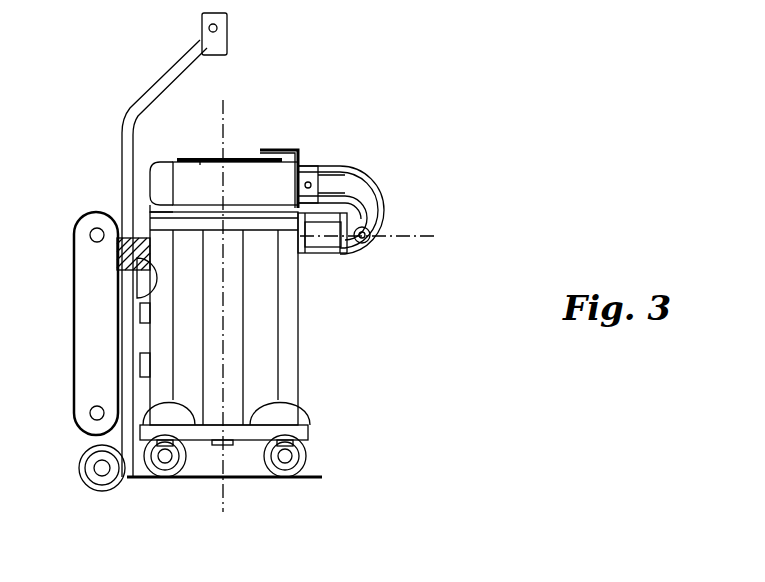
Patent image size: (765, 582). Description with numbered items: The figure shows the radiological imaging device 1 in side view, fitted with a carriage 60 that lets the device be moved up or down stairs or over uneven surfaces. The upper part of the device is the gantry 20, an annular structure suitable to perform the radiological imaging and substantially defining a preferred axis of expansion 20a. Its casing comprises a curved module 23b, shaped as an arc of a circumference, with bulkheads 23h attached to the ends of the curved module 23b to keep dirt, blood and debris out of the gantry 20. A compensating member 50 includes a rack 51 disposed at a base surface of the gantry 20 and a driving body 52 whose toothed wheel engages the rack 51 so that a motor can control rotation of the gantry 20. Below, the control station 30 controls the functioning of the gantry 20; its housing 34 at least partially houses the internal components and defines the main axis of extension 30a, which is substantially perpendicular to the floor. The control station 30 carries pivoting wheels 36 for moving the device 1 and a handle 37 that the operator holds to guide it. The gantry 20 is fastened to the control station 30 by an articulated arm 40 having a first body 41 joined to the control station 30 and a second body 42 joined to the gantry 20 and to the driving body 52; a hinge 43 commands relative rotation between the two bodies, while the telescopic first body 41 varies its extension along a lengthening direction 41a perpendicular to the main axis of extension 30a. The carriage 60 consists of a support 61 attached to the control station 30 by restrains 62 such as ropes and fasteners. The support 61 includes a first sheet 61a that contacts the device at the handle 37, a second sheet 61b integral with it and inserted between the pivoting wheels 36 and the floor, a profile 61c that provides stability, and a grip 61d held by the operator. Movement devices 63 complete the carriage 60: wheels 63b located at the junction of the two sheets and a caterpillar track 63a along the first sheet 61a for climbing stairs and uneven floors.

The radiological imaging device 1 is at (555, 404).
The gantry 20 is at (236, 117).
The preferred axis of expansion 20a is at (227, 138).
The curved module 23b is at (257, 186).
The bulkheads 23h is at (170, 176).
The control station 30 is at (310, 328).
The main axis of extension 30a is at (223, 498).
The housing 34 is at (320, 347).
The pivoting wheels 36 is at (306, 460).
The handle 37 is at (133, 278).
The articulated arm 40 is at (413, 217).
The first body 41 is at (312, 264).
The lengthening direction 41a is at (424, 238).
The second body 42 is at (390, 163).
The hinge 43 is at (392, 230).
The compensating member 50 is at (308, 149).
The rack 51 is at (200, 158).
The driving body 52 is at (300, 163).
The carriage 60 is at (215, 279).
The support 61 is at (225, 279).
The first sheet 61a is at (127, 480).
The second sheet 61b is at (308, 481).
The profile 61c is at (121, 155).
The grip 61d is at (202, 19).
The restrains 62 is at (137, 224).
The movement devices 63 is at (72, 367).
The caterpillar track 63a is at (73, 333).
The wheels 63b is at (78, 465).